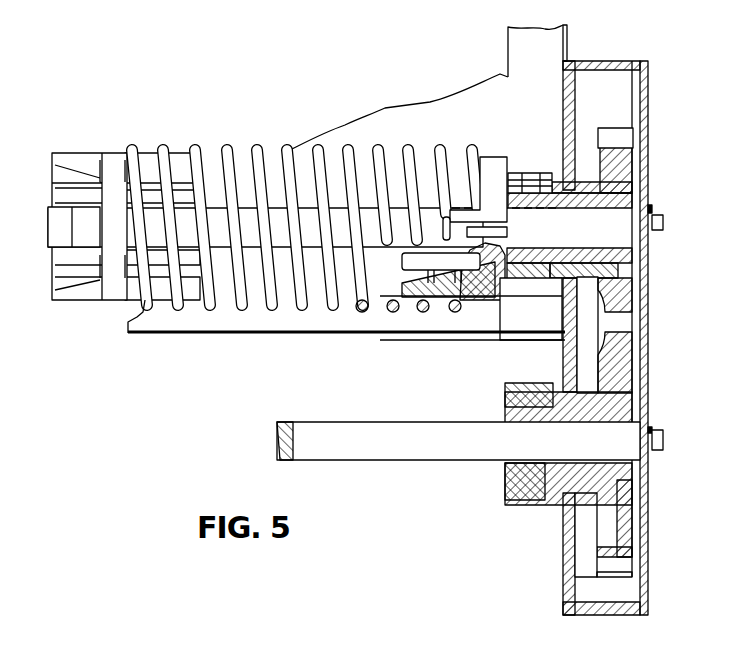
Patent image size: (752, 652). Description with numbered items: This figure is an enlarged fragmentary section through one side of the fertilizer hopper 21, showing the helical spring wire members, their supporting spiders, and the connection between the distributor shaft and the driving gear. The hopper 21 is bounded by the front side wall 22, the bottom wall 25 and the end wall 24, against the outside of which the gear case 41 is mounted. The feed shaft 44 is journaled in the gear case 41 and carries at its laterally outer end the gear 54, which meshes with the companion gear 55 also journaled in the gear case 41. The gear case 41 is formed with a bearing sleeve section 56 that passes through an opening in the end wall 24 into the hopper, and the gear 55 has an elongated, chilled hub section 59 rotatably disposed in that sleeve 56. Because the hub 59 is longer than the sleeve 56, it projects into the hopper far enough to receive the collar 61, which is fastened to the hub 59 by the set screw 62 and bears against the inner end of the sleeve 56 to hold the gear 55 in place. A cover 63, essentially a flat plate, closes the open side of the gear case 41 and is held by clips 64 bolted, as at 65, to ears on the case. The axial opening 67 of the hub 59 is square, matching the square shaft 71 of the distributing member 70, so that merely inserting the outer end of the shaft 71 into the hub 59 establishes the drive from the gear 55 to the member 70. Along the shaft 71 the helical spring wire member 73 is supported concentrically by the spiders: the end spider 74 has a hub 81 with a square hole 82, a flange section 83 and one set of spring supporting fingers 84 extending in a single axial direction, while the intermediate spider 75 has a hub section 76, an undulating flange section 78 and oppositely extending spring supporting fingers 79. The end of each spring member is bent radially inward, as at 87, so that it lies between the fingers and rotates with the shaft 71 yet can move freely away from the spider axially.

The hopper 21 is at (283, 342).
The front side wall 22 is at (376, 117).
The end wall 24 is at (567, 42).
The bottom wall 25 is at (200, 322).
The gear case 41 is at (560, 545).
The feed shaft 44 is at (375, 452).
The gear 54 is at (625, 378).
The companion gear 55 is at (628, 283).
The bearing sleeve section 56 is at (545, 175).
The hub section 59 is at (600, 210).
The collar 61 is at (527, 287).
The set screw 62 is at (515, 175).
The cover 63 is at (650, 150).
The clips 64 is at (650, 210).
The bolts 65 is at (660, 238).
The axial opening 67 is at (555, 228).
The distributing member 70 is at (228, 134).
The square shaft 71 is at (663, 228).
The helical spring wire member 73 is at (280, 150).
The end spider 74 is at (477, 150).
The intermediate spider 75 is at (108, 150).
The hub section 76 is at (80, 230).
The flange section 78 is at (112, 240).
The spring supporting fingers 79 is at (60, 166).
The hub 81 is at (466, 246).
The square hole 82 is at (478, 300).
The flange section 83 is at (500, 305).
The spring supporting fingers 84 is at (405, 302).
The inwardly bent end 87 is at (133, 175).